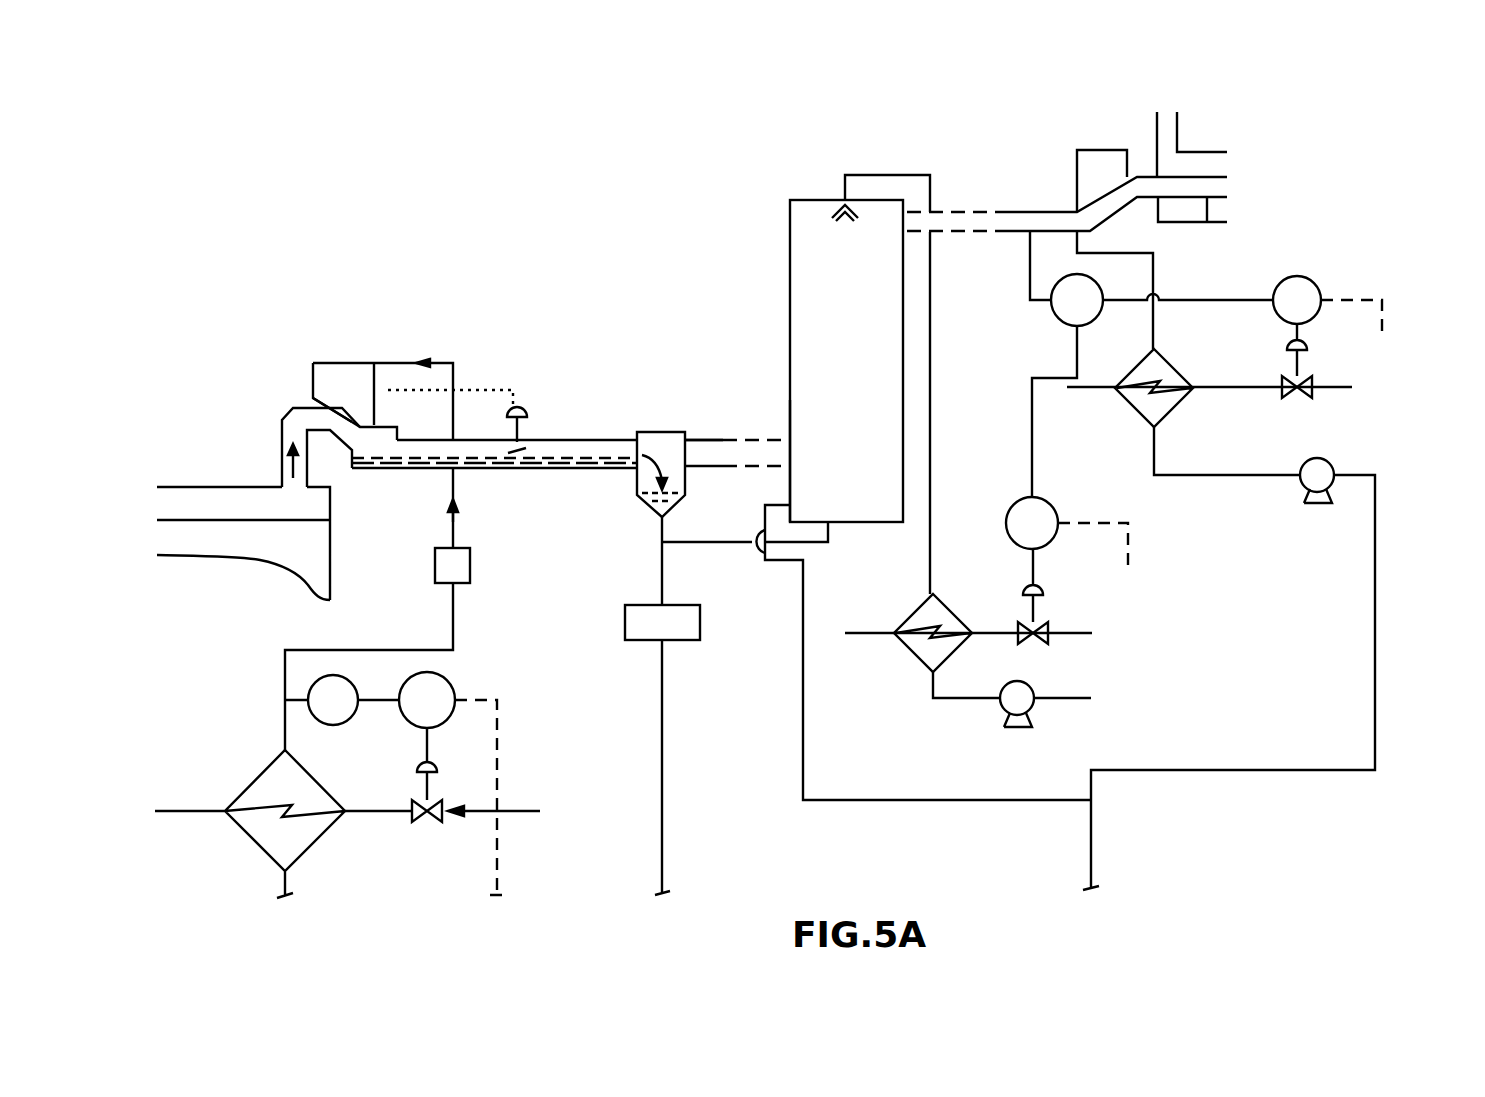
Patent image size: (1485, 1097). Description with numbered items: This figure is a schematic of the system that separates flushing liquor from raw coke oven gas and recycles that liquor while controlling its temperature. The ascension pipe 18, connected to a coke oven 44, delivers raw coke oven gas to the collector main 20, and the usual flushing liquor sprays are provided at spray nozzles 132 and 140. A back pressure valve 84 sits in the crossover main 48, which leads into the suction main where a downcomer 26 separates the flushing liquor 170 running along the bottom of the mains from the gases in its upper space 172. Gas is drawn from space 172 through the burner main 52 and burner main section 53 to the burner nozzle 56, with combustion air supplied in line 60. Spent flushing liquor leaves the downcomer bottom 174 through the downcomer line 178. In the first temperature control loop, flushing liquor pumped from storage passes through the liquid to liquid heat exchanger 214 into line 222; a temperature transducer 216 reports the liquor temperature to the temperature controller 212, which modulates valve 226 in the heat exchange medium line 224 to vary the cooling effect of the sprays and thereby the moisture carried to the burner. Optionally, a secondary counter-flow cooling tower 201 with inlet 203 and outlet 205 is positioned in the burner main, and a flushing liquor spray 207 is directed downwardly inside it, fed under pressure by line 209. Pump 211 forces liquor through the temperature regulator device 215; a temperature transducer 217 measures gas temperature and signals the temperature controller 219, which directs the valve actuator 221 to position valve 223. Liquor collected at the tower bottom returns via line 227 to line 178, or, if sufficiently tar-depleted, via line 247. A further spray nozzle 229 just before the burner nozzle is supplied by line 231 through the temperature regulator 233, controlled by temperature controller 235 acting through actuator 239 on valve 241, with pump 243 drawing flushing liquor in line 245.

The ascension pipe 18 is at (280, 413).
The collector main 20 is at (400, 418).
The downcomer 26 is at (653, 432).
The coke oven 44 is at (200, 485).
The crossover main 48 is at (562, 437).
The burner main 52 is at (700, 440).
The burner main section 53 is at (1023, 210).
The burner nozzle 56 is at (1223, 170).
The air line 60 is at (1186, 124).
The back pressure valve 84 is at (517, 405).
The spray nozzle 132 is at (340, 424).
The spray nozzle 140 is at (374, 438).
The flushing liquor 170 is at (550, 470).
The upper space 172 is at (677, 453).
The downcomer bottom 174 is at (650, 503).
The downcomer line 178 is at (667, 730).
The secondary counter-flow cooling tower 201 is at (790, 255).
The cooling tower inlet 203 is at (790, 452).
The cooling tower outlet 205 is at (900, 218).
The flushing liquor spray 207 is at (835, 215).
The flushing liquor supply line 209 is at (933, 330).
The pump 211 is at (1003, 702).
The temperature controller 212 is at (455, 680).
The temperature regulator 214 is at (247, 783).
The temperature regulator device 215 is at (910, 652).
The temperature transducer 216 is at (310, 687).
The temperature transducer 217 is at (1052, 290).
The temperature controller 219 is at (1047, 502).
The valve actuator 221 is at (1043, 587).
The flushing liquor line 222 is at (343, 648).
The valve 223 is at (1033, 640).
The heat exchange medium line 224 is at (523, 803).
The valve 226 is at (430, 817).
The return line 227 is at (707, 540).
The flushing liquor spray nozzle 229 is at (1127, 182).
The flushing liquor supply line 231 is at (1155, 268).
The temperature regulator 233 is at (1182, 402).
The temperature controller 235 is at (1302, 277).
The actuator 239 is at (1308, 347).
The valve 241 is at (1302, 397).
The pump 243 is at (1325, 455).
The flushing liquor line 245 is at (1375, 586).
The return line 247 is at (802, 788).